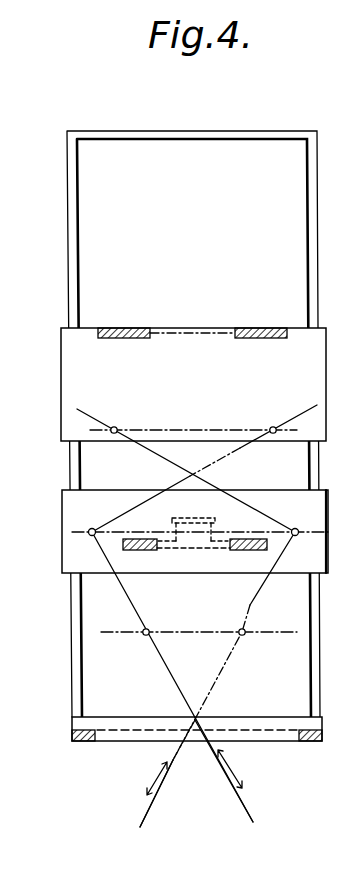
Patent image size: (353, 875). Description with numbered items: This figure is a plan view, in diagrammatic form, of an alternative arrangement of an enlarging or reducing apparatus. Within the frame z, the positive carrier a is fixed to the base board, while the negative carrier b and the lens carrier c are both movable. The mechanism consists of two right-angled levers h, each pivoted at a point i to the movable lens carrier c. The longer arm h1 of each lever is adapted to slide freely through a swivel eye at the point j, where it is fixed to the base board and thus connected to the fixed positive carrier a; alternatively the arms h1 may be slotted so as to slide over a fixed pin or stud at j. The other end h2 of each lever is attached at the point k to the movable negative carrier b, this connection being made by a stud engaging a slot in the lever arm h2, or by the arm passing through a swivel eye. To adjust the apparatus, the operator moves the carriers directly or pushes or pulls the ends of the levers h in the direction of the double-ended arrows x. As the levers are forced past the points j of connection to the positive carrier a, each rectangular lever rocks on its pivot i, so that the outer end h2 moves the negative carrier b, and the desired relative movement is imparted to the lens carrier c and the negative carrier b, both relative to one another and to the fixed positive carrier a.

The frame z is at (167, 135).
The negative carrier b is at (112, 339).
The lens carrier c is at (327, 503).
The positive carrier a is at (265, 735).
The point of attachment to negative carrier k is at (114, 430).
The pivot i is at (88, 532).
The swivel eye or fixed pin j is at (137, 628).
The right-angled lever h is at (127, 595).
The outer end of lever h2 is at (250, 463).
The longer arm of lever h1 is at (266, 826).
The double-ended arrows x is at (196, 773).